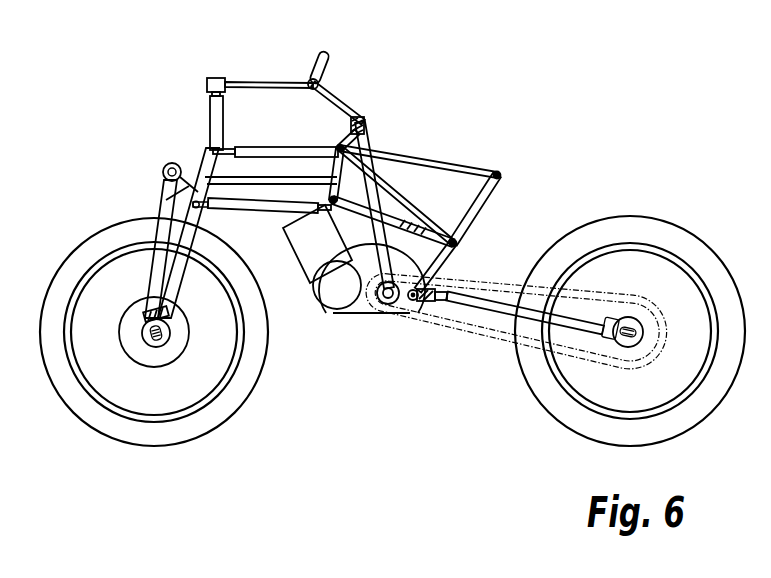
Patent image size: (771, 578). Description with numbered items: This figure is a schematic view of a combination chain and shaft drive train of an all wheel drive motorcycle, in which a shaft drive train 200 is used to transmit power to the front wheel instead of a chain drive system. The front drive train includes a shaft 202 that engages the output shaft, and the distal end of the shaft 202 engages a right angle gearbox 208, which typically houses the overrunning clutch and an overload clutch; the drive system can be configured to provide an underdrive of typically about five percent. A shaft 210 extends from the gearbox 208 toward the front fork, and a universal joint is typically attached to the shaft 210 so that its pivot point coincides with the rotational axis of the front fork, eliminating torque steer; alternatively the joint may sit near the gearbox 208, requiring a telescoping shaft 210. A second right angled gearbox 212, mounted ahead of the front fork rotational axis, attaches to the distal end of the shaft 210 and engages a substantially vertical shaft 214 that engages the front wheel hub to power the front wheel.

The shaft drive train 200 is at (390, 167).
The shaft 202 is at (374, 260).
The right angle gearbox 208 is at (347, 256).
The shaft 210 is at (192, 204).
The second right angled gearbox 212 is at (192, 178).
The substantially vertical shaft 214 is at (152, 283).